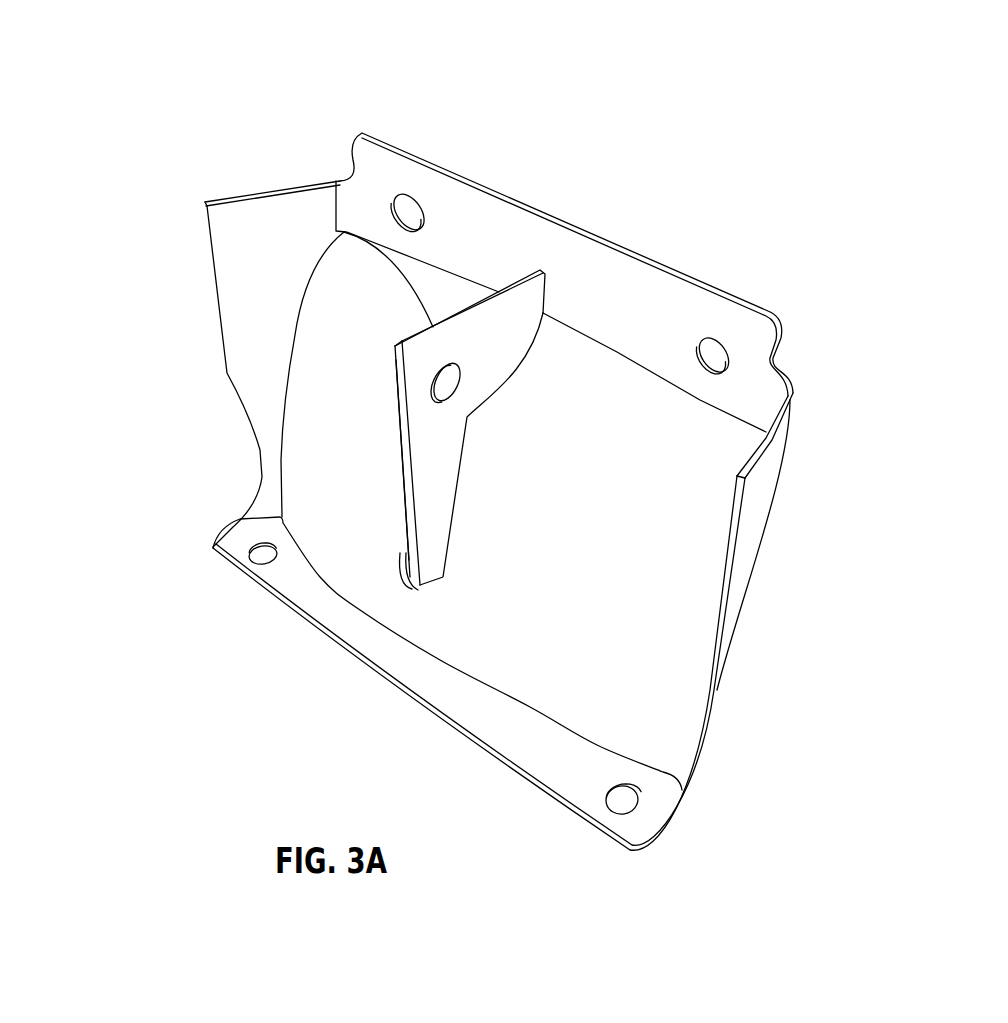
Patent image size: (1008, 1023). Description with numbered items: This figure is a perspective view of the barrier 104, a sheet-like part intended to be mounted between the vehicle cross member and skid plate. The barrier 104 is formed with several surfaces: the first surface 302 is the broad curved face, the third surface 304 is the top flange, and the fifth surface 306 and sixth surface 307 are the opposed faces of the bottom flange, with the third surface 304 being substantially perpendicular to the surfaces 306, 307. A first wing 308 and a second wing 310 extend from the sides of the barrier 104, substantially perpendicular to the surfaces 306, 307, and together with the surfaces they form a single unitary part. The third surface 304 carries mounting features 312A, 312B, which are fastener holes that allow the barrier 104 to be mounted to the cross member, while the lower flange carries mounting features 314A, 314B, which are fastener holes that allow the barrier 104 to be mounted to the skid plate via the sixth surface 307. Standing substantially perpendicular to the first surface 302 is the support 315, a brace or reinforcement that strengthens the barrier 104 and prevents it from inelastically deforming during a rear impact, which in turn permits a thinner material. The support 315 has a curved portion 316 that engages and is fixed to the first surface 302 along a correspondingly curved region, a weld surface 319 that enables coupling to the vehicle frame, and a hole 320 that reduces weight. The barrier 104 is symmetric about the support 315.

The barrier 104 is at (142, 46).
The first surface 302 is at (617, 558).
The third surface 304 is at (592, 280).
The fifth surface 306 is at (470, 700).
The sixth surface 307 is at (333, 661).
The first wing 308 is at (222, 200).
The second wing 310 is at (791, 404).
The mounting feature 312A is at (403, 195).
The mounting feature 312B is at (726, 336).
The mounting feature 314A is at (616, 814).
The mounting feature 314B is at (260, 567).
The support 315 is at (405, 430).
The curved portion 316 is at (473, 413).
The weld surface 319 is at (367, 237).
The hole 320 is at (437, 375).